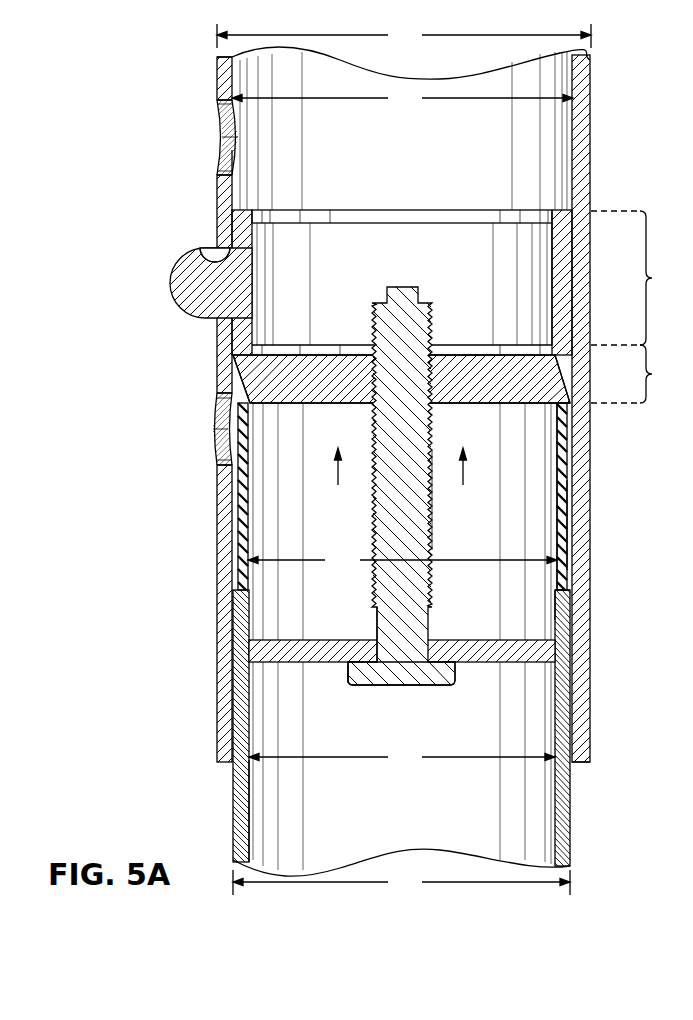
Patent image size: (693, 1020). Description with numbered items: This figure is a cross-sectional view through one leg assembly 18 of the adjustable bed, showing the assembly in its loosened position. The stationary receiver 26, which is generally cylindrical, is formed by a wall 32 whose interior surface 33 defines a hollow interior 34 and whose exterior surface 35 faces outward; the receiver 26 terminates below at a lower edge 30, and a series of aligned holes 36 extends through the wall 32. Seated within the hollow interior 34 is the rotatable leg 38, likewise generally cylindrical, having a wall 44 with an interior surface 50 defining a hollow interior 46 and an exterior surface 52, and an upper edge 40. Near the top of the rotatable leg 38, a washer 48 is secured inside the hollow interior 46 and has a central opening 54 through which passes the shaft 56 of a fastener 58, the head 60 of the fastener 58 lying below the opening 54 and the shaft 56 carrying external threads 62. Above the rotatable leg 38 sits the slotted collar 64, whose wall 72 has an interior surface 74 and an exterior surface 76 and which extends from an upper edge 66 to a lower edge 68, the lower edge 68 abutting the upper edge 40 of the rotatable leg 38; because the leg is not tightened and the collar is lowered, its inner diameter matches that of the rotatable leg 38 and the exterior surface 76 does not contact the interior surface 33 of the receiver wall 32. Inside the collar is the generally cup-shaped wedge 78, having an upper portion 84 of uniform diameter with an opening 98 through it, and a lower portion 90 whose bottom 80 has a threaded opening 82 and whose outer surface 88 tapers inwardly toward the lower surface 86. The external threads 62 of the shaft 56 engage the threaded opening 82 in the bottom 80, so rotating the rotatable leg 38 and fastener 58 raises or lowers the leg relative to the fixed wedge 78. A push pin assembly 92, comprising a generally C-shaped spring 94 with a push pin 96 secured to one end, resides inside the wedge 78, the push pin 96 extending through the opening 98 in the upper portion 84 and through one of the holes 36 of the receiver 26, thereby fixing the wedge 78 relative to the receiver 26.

The leg assembly 18 is at (147, 96).
The receiver 26 is at (592, 119).
The lower edge 30 is at (583, 763).
The wall 32 is at (578, 143).
The interior surface 33 is at (232, 172).
The hollow interior 34 is at (403, 131).
The exterior surface 35 is at (216, 71).
The aligned holes 36 is at (222, 120).
The rotatable leg 38 is at (577, 818).
The upper edge 40 is at (571, 573).
The wall 44 is at (566, 840).
The hollow interior 46 is at (402, 636).
The washer 48 is at (284, 660).
The interior surface 50 is at (246, 843).
The exterior surface 52 is at (233, 780).
The central opening 54 is at (388, 646).
The shaft 56 is at (401, 285).
The fastener 58 is at (432, 690).
The head 60 is at (364, 681).
The external threads 62 is at (433, 517).
The slotted collar 64 is at (572, 471).
The upper edge 66 is at (570, 400).
The lower edge 68 is at (561, 594).
The wall 72 is at (564, 503).
The interior surface 74 is at (350, 521).
The exterior surface 76 is at (567, 526).
The wedge 78 is at (337, 209).
The bottom 80 is at (470, 353).
The threaded opening 82 is at (410, 352).
The upper portion 84 is at (632, 278).
The lower surface 86 is at (519, 406).
The outer surface 88 is at (236, 388).
The lower portion 90 is at (632, 374).
The push pin assembly 92 is at (400, 219).
The C-shaped spring 94 is at (500, 258).
The push pin 96 is at (195, 289).
The opening 98 is at (212, 255).